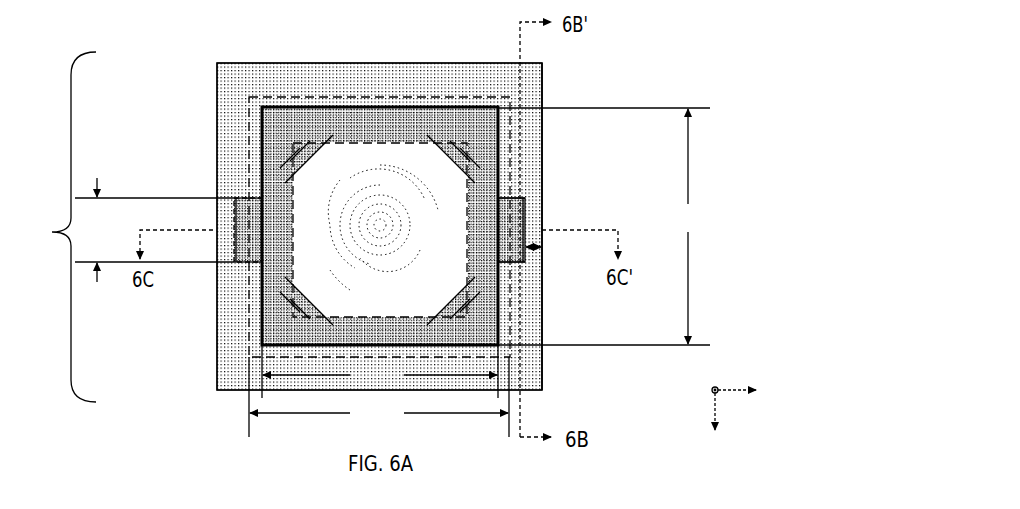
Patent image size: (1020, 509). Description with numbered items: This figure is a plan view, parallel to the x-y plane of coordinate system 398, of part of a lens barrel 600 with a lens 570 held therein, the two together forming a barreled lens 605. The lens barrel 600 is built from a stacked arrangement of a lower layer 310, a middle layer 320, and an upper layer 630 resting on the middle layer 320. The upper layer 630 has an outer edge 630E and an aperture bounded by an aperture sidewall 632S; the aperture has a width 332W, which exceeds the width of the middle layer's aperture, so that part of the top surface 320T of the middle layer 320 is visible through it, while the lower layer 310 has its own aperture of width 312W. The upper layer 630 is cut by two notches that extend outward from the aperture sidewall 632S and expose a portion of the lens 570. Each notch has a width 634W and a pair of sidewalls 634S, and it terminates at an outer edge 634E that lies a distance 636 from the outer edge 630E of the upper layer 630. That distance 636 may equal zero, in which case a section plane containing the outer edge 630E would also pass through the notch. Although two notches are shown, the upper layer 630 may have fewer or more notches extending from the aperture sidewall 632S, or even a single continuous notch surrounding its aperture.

The lens barrel 600 is at (152, 99).
The barreled lens 605 is at (52, 235).
The lens 570 is at (259, 106).
The middle layer 320 is at (258, 122).
The lower layer 310 is at (250, 147).
The upper layer 630 is at (427, 90).
The top surface 320T is at (447, 138).
The outer edge 630E is at (572, 136).
The aperture sidewall 632S is at (492, 190).
The sidewalls 634S is at (249, 181).
The outer edge 634E is at (239, 238).
The width 634W is at (154, 230).
The distance 636 is at (535, 250).
The width 332W is at (490, 253).
The width 312W is at (379, 397).
The coordinate system 398 is at (753, 459).